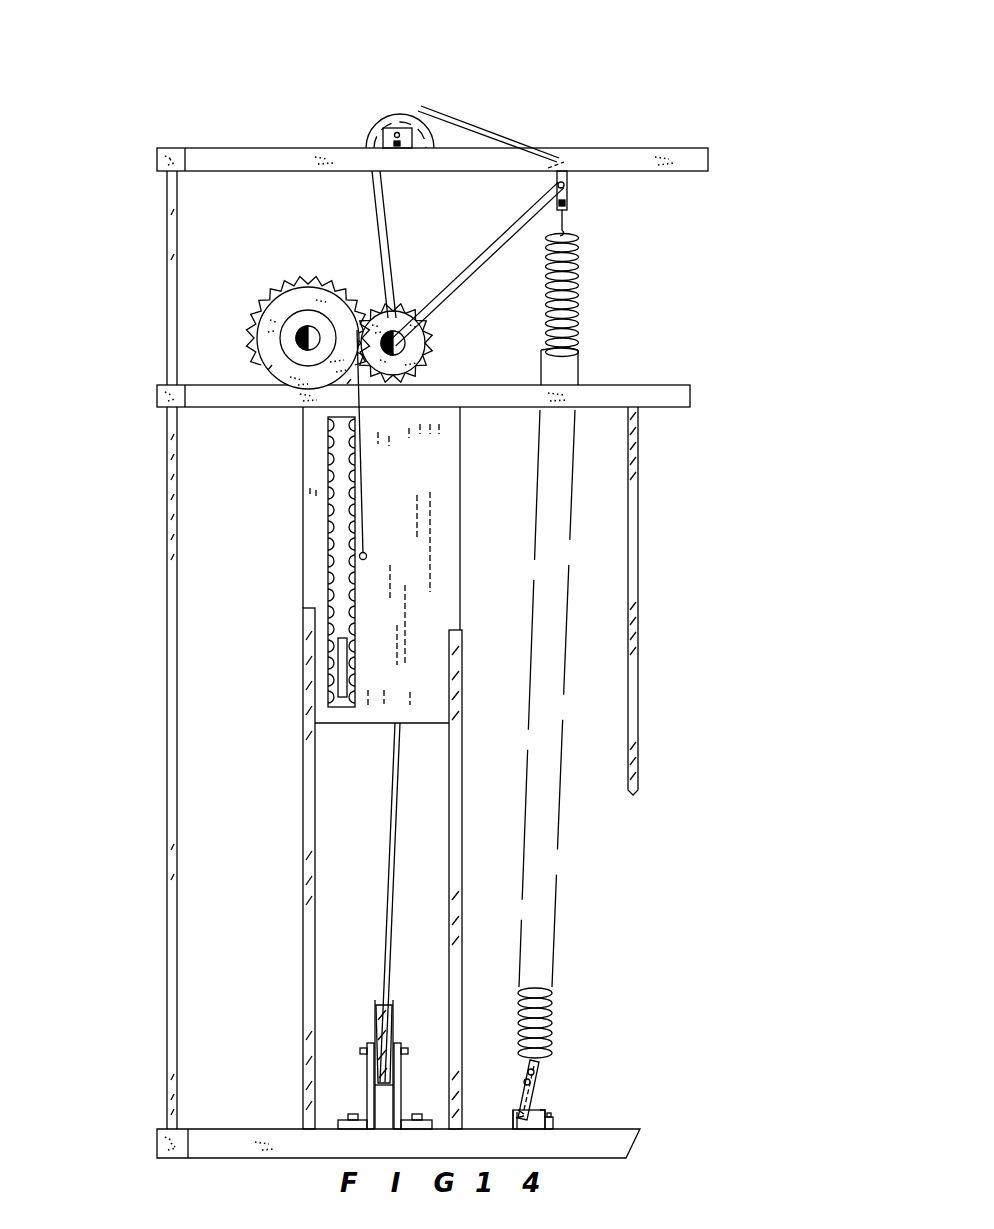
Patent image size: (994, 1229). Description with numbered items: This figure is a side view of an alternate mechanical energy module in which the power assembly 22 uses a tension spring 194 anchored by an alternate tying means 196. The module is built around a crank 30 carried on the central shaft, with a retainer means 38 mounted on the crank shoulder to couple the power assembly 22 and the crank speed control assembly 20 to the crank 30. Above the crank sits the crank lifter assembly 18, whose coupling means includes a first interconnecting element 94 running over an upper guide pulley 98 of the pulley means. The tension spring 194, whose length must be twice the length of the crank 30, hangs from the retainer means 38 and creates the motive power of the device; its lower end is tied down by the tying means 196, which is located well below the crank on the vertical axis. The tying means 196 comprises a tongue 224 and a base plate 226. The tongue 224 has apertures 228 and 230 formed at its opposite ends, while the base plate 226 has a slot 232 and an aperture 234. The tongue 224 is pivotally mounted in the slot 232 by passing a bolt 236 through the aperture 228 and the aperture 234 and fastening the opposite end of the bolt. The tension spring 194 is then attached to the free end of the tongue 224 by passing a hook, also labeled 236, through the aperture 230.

The crank lifter assembly 18 is at (262, 343).
The crank speed control assembly 20 is at (300, 609).
The power assembly 22 is at (584, 272).
The crank 30 is at (470, 246).
The retainer means 38 is at (568, 197).
The first interconnecting element 94 is at (478, 128).
The upper guide pulley 98 is at (398, 118).
The tension spring 194 is at (545, 993).
The tying means 196 is at (554, 1098).
The tongue 224 is at (546, 1088).
The base plate 226 is at (550, 1129).
The aperture 228 is at (524, 1111).
The aperture 230 is at (368, 1030).
The slot 232 is at (555, 1118).
The aperture 234 is at (515, 1129).
The bolt 236 is at (541, 1080).